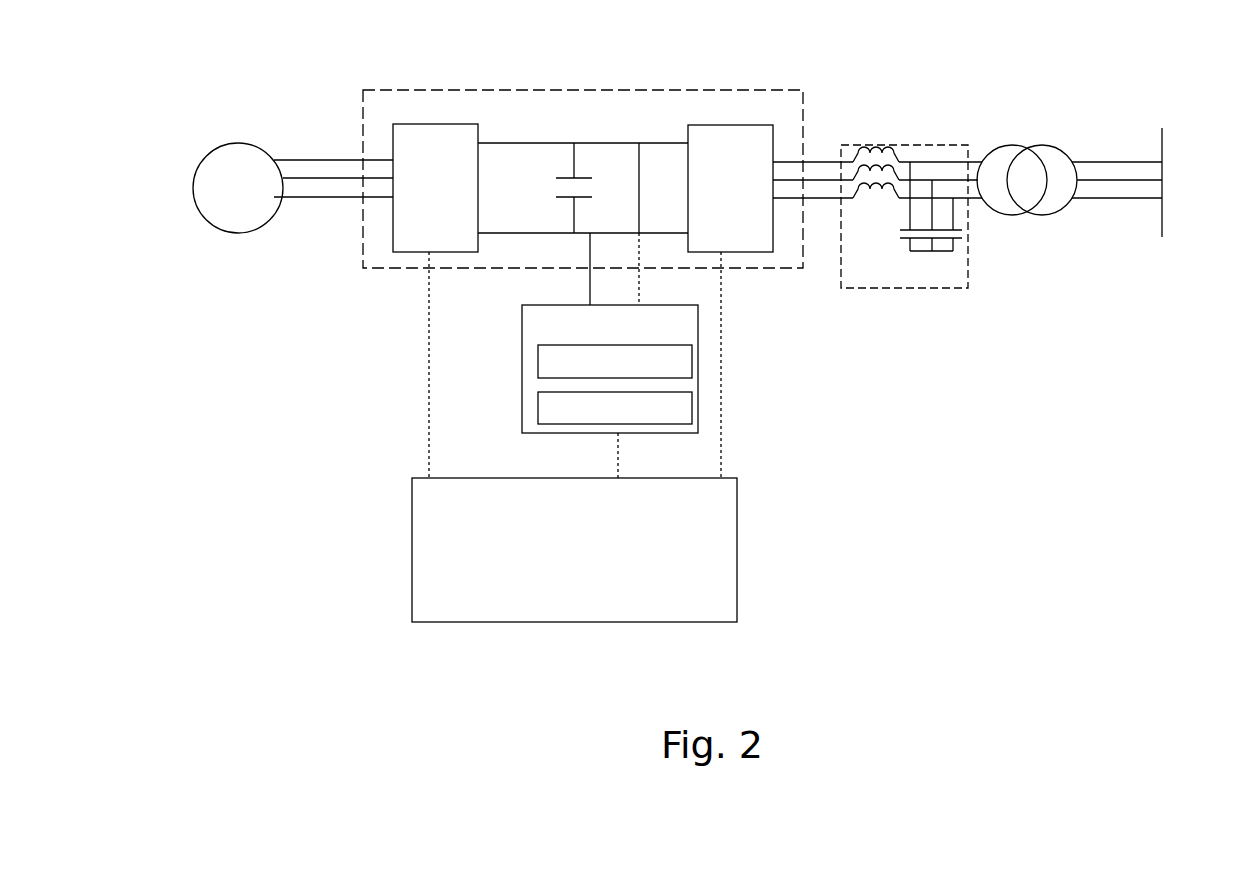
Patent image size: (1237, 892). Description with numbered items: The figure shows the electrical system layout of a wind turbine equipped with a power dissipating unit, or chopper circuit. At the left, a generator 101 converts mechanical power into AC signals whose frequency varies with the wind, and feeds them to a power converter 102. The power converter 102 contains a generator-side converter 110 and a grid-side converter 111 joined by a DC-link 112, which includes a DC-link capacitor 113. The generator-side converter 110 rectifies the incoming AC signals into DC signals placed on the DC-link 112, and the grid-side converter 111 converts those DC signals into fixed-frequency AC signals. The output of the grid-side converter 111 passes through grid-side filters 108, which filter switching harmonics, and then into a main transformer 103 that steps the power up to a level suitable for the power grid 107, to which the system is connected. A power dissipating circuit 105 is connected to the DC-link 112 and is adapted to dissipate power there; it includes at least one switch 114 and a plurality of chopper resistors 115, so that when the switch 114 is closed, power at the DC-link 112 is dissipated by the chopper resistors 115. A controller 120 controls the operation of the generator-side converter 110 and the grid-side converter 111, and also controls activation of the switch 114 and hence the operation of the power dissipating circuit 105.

The generator 101 is at (240, 142).
The power converter 102 is at (805, 122).
The main transformer 103 is at (1047, 146).
The power dissipating circuit 105 is at (568, 337).
The power grid 107 is at (1165, 160).
The grid-side filters 108 is at (922, 145).
The generator-side converter 110 is at (447, 166).
The grid-side converter 111 is at (742, 168).
The DC-link 112 is at (501, 143).
The DC-link capacitor 113 is at (573, 217).
The switch 114 is at (588, 373).
The chopper resistors 115 is at (588, 418).
The controller 120 is at (467, 518).